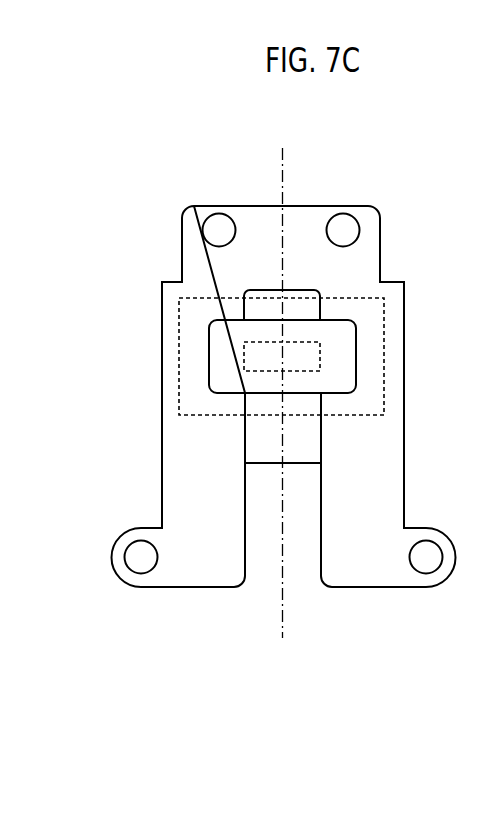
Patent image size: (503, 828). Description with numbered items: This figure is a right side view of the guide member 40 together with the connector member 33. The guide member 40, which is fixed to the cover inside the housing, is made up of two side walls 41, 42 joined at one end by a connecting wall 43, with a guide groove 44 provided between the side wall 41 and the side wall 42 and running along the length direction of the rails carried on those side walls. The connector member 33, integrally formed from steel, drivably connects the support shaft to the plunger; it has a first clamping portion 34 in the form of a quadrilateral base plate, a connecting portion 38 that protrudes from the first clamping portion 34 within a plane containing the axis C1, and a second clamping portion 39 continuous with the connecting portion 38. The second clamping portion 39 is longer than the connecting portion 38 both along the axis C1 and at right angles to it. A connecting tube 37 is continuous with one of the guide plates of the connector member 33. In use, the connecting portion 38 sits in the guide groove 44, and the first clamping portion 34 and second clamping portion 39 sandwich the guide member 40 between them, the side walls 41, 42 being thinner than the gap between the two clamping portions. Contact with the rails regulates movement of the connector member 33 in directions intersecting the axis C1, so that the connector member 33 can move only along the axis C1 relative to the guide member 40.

The guide member 40 is at (178, 607).
The connecting wall 43 is at (258, 223).
The connector member 33 is at (192, 331).
The first clamping portion 34 is at (302, 310).
The second clamping portion 39 is at (340, 347).
The connecting portion 38 is at (244, 360).
The connecting tube 37 is at (264, 452).
The side wall 42 is at (202, 460).
The side wall 41 is at (362, 437).
The guide groove 44 is at (307, 523).
The axis C1 is at (283, 160).